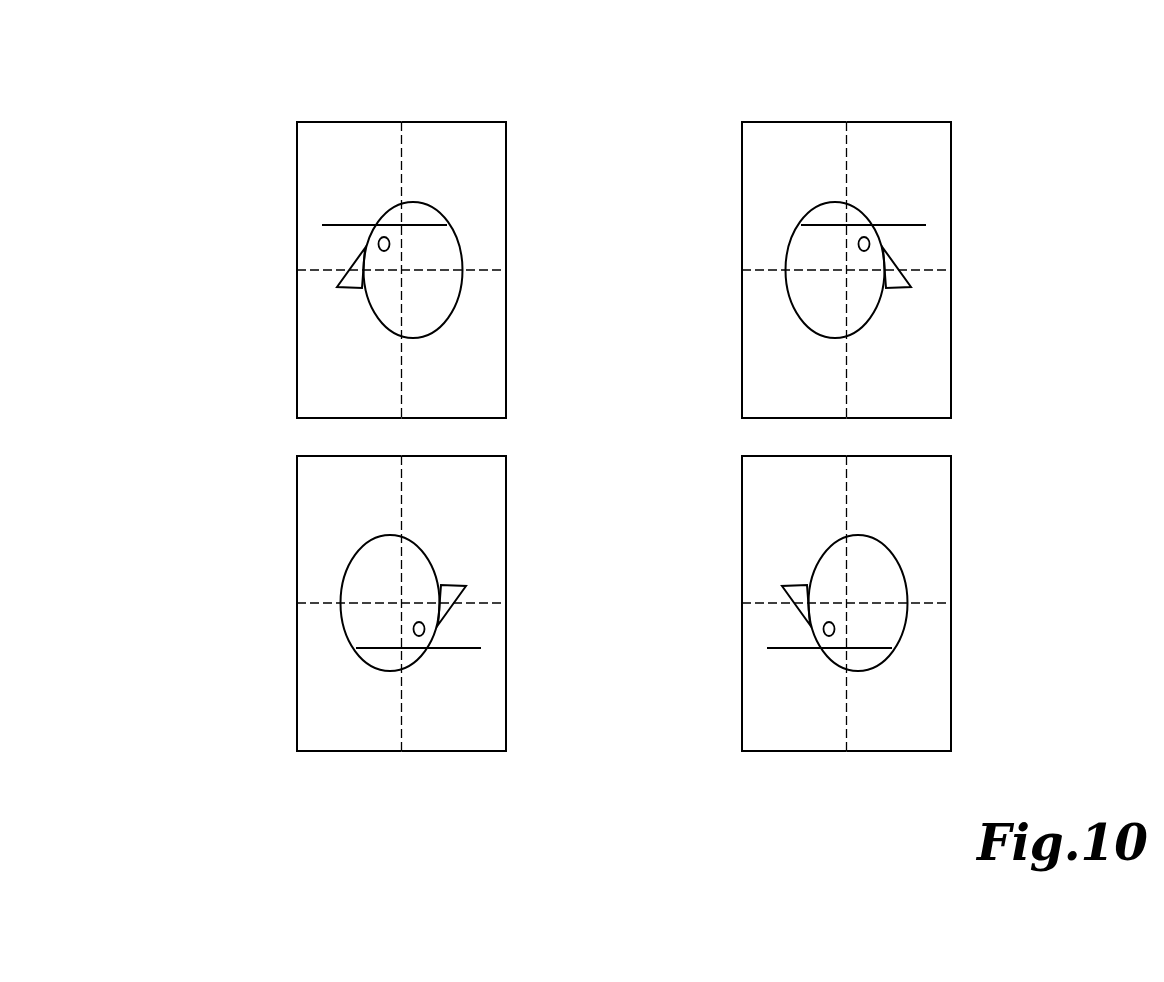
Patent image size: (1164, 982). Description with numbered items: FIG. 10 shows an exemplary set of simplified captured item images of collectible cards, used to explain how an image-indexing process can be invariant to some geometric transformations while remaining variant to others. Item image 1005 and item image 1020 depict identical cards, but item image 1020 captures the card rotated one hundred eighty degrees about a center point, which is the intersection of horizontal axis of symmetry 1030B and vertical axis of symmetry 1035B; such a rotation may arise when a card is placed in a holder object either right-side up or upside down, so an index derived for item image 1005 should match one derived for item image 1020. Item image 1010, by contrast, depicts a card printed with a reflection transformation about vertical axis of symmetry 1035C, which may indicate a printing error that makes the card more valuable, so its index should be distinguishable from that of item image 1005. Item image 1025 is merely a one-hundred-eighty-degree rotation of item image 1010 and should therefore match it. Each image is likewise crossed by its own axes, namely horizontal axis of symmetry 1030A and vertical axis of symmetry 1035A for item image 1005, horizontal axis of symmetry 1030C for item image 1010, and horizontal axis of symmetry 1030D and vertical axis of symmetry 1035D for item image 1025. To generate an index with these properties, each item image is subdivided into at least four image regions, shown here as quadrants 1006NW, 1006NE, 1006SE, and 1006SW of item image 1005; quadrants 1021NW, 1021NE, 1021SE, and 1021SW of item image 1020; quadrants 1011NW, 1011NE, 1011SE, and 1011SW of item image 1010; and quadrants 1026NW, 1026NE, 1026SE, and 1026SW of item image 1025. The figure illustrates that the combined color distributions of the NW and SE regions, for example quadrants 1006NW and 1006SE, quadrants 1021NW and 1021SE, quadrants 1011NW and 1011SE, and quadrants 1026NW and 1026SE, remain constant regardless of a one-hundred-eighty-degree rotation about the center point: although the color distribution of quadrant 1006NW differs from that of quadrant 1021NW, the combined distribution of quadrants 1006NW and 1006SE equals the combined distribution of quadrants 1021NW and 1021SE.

The item image 1005 is at (400, 232).
The item image 1010 is at (845, 232).
The item image 1020 is at (398, 640).
The item image 1025 is at (844, 640).
The quadrant 1006NW is at (297, 167).
The quadrant 1006NE is at (507, 238).
The quadrant 1006SW is at (297, 365).
The quadrant 1006SE is at (507, 378).
The quadrant 1011NW is at (742, 178).
The quadrant 1011NE is at (952, 177).
The quadrant 1011SW is at (742, 355).
The quadrant 1011SE is at (952, 318).
The quadrant 1021NW is at (297, 508).
The quadrant 1021NE is at (507, 550).
The quadrant 1021SW is at (297, 680).
The quadrant 1021SE is at (507, 705).
The quadrant 1026NW is at (742, 508).
The quadrant 1026NE is at (952, 522).
The quadrant 1026SW is at (742, 680).
The quadrant 1026SE is at (952, 662).
The horizontal axis of symmetry 1030A is at (293, 269).
The horizontal axis of symmetry 1030B is at (293, 602).
The horizontal axis of symmetry 1030C is at (738, 269).
The horizontal axis of symmetry 1030D is at (738, 602).
The vertical axis of symmetry 1035A is at (402, 119).
The vertical axis of symmetry 1035B is at (402, 756).
The vertical axis of symmetry 1035C is at (846, 119).
The vertical axis of symmetry 1035D is at (846, 756).